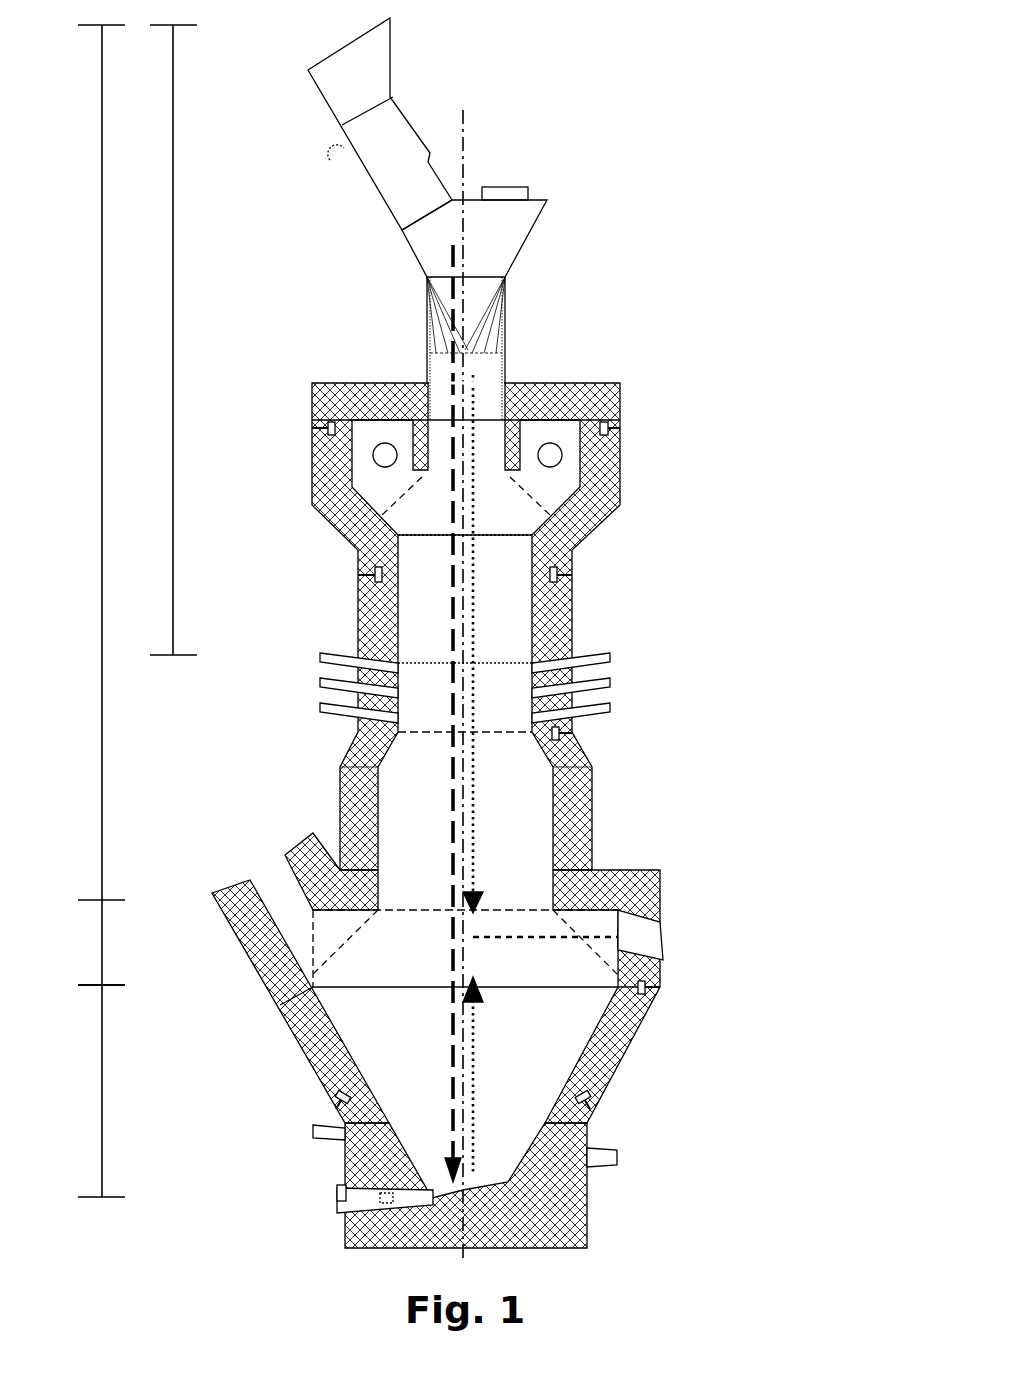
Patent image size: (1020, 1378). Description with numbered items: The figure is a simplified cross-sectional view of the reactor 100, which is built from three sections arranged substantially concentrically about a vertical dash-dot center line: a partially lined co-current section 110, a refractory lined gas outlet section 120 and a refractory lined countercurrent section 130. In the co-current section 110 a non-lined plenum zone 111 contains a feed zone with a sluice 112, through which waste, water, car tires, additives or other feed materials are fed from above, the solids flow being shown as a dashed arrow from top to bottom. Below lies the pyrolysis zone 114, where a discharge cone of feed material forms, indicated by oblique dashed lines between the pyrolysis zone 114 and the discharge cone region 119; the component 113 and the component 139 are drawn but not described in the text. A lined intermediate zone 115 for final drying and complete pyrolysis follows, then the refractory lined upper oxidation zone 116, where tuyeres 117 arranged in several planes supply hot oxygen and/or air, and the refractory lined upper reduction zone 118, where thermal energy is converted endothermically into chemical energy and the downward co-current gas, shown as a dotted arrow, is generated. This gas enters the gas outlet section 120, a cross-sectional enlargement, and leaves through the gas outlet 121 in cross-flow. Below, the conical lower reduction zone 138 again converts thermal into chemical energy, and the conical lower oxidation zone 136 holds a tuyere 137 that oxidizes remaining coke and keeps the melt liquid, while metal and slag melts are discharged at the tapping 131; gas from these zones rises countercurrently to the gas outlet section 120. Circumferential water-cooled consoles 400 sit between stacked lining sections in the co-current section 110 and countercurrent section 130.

The reactor 100 is at (712, 146).
The co-current section 110 is at (82, 462).
The plenum zone 111 is at (191, 340).
The sluice 112 is at (392, 172).
The feed head block 113 is at (490, 403).
The pyrolysis zone 114 is at (510, 525).
The intermediate zone 115 is at (503, 605).
The upper oxidation zone 116 is at (503, 685).
The tuyere 117 is at (320, 707).
The upper reduction zone 118 is at (515, 822).
The discharge cone region 119 is at (550, 455).
The gas outlet section 120 is at (82, 942).
The gas outlet 121 is at (658, 928).
The countercurrent section 130 is at (82, 1091).
The tapping 131 is at (355, 1202).
The conical lower oxidation zone 136 is at (510, 1135).
The tuyere 137 is at (617, 1153).
The conical lower reduction zone 138 is at (523, 1065).
The nozzle 139 is at (313, 1133).
The circumferential water-cooled console 400 is at (557, 572).